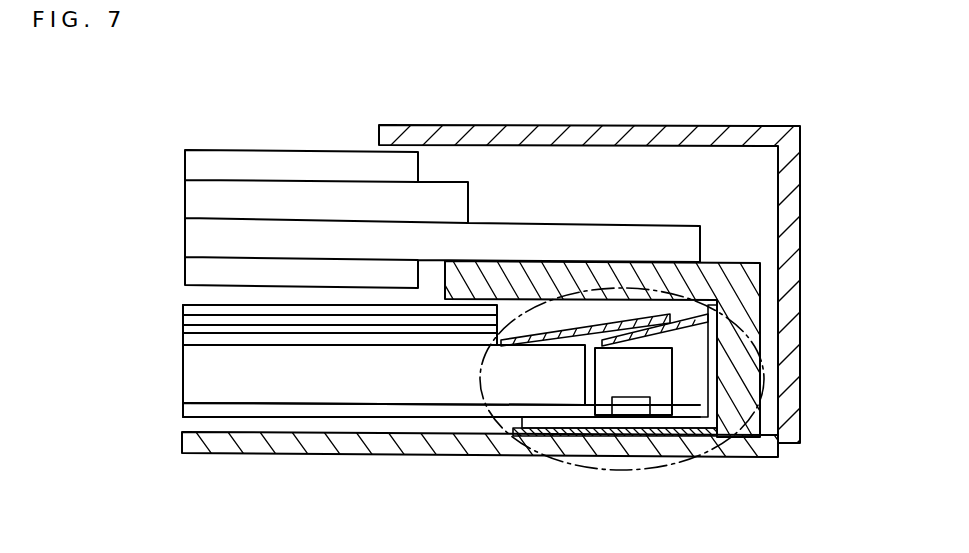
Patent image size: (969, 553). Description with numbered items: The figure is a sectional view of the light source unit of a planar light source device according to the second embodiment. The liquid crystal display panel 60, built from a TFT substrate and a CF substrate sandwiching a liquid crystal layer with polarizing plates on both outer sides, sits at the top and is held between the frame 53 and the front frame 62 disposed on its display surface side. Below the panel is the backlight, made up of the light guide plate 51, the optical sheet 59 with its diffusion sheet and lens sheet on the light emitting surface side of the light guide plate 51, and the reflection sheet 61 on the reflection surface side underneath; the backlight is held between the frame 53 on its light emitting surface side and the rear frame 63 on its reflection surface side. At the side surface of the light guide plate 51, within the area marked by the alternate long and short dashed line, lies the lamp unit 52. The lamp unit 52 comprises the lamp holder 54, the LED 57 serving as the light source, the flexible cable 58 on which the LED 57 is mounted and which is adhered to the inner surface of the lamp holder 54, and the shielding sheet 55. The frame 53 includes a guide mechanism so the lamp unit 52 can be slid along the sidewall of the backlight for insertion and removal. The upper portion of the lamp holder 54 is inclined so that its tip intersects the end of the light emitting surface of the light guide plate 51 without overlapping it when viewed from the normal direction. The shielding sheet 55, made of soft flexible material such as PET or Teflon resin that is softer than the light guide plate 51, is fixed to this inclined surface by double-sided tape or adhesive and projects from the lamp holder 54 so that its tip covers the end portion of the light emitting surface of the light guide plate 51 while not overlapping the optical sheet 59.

The light guide plate 51 is at (195, 380).
The lamp unit 52 is at (632, 472).
The frame 53 is at (591, 303).
The lamp holder 54 is at (568, 437).
The shielding sheet 55 is at (650, 316).
The LED 57 is at (655, 377).
The flexible cable 58 is at (698, 420).
The optical sheet 59 is at (178, 300).
The liquid crystal display panel 60 is at (178, 152).
The reflection sheet 61 is at (195, 412).
The front frame 62 is at (418, 135).
The rear frame 63 is at (337, 447).